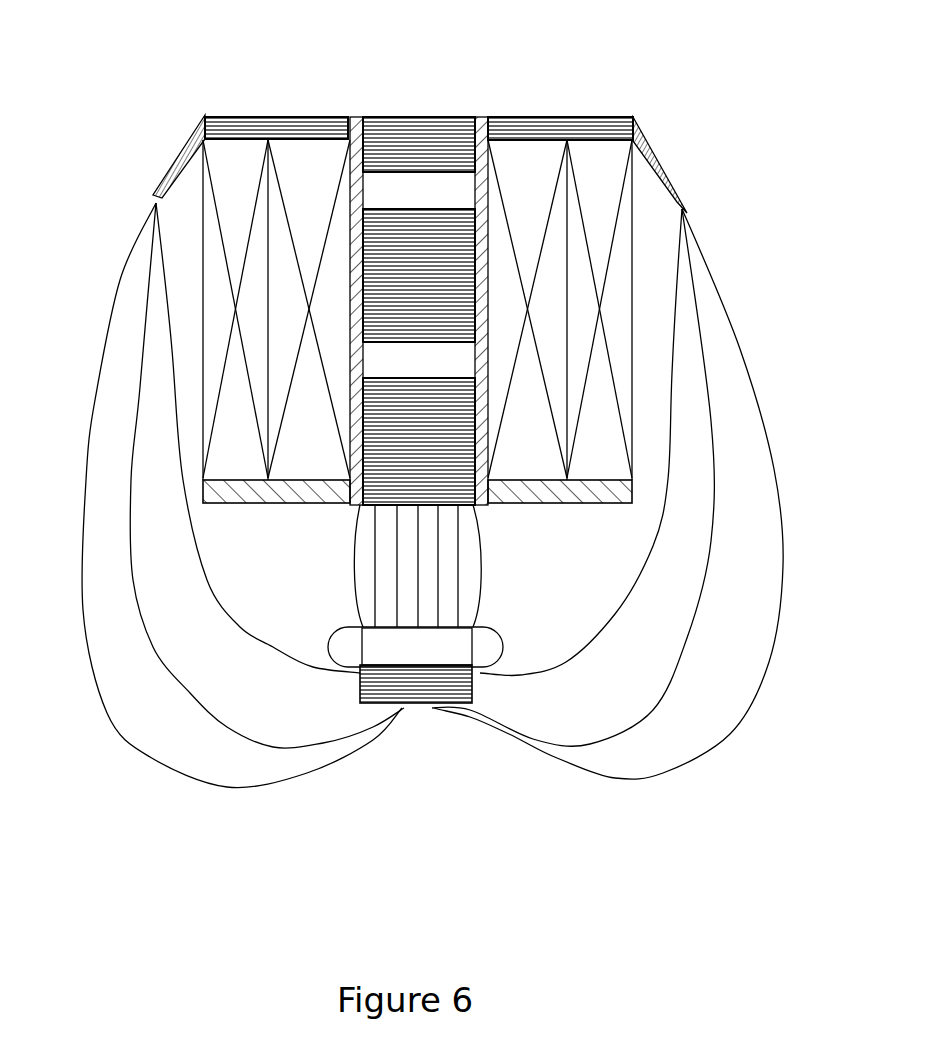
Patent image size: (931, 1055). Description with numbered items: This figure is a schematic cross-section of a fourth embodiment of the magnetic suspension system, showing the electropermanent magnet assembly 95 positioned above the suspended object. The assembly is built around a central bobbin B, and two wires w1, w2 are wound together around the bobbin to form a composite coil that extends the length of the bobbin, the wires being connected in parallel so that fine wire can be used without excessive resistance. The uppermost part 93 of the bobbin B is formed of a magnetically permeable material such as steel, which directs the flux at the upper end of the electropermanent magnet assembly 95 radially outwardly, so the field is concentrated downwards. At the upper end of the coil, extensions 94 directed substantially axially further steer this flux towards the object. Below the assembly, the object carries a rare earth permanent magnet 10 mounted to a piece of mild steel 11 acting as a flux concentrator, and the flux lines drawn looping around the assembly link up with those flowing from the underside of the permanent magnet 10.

The bobbin B is at (434, 113).
The uppermost part of the bobbin 93 is at (565, 128).
The extensions 94 is at (176, 155).
The electropermanent magnet assembly 95 is at (640, 320).
The rare earth permanent magnet 10 is at (443, 645).
The piece of mild steel 11 is at (453, 685).
The wire w1 is at (265, 128).
The wire w2 is at (267, 128).